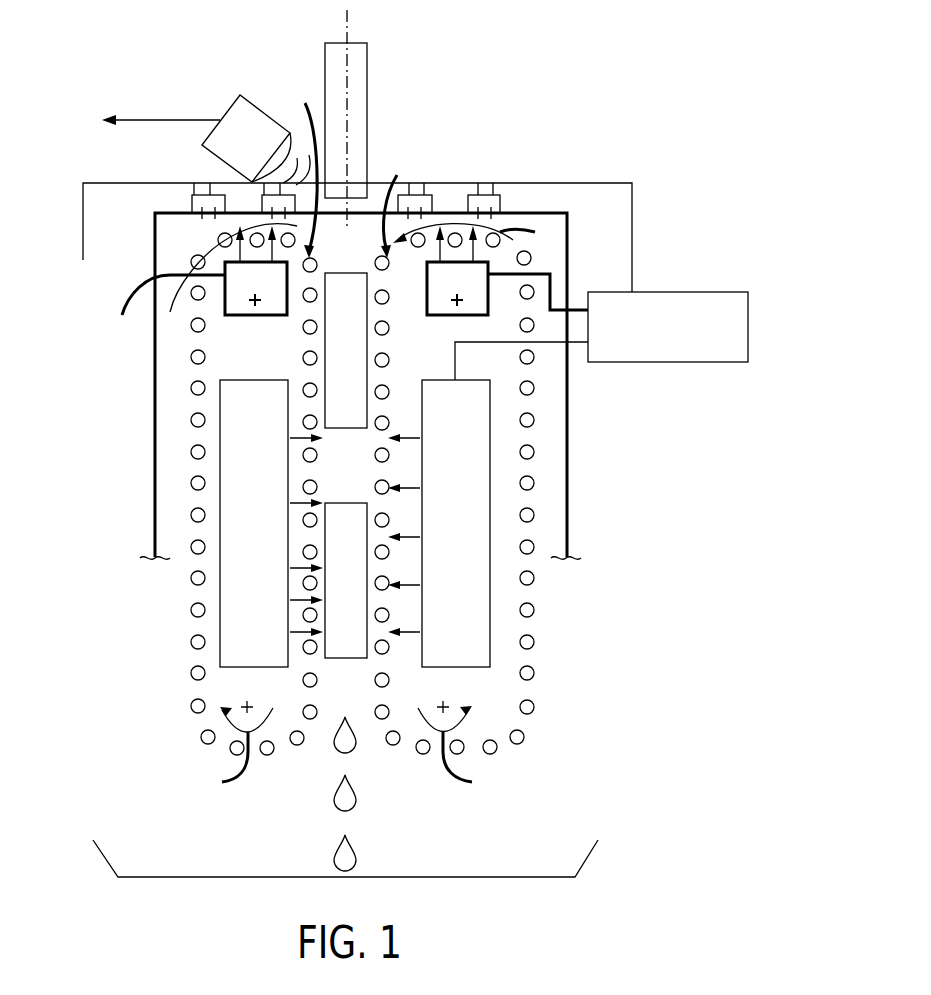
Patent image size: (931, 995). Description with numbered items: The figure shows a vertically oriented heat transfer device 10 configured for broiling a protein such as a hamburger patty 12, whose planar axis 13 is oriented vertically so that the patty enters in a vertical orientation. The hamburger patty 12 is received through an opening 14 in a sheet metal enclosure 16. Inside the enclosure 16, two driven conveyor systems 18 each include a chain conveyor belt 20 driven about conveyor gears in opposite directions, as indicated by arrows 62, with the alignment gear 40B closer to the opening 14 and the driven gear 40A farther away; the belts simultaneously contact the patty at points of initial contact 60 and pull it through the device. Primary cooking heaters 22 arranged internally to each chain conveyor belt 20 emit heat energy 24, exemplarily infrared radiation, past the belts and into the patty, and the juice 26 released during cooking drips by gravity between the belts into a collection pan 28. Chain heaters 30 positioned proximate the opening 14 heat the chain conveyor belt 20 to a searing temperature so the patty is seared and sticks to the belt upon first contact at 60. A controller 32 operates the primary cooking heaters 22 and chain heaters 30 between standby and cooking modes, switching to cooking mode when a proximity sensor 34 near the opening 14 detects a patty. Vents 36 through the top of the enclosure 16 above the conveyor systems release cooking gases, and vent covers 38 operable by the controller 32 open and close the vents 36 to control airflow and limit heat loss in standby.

The heat transfer device 10 is at (724, 147).
The hamburger patty 12 is at (360, 52).
The axis 13 is at (355, 95).
The opening 14 is at (388, 162).
The enclosure 16 is at (155, 378).
The driven conveyor systems 18 is at (185, 630).
The chain conveyor belt 20 is at (191, 578).
The primary cooking heaters 22 is at (232, 470).
The heat energy 24 is at (385, 372).
The juice 26 is at (358, 749).
The collection pan 28 is at (103, 858).
The chain heaters 30 is at (427, 274).
The controller 32 is at (705, 292).
The proximity sensor 34 is at (255, 92).
The vents 36 is at (278, 230).
The vent covers 38 is at (195, 183).
The driven gear 40A is at (240, 706).
The alignment gear 40B is at (250, 306).
The points of initial contact 60 is at (357, 167).
The arrows 62 is at (360, 509).